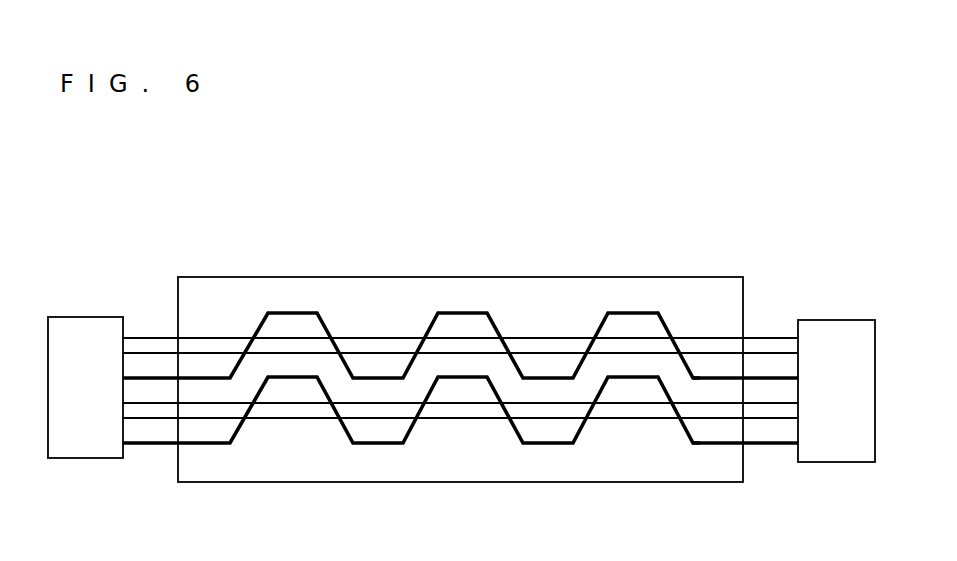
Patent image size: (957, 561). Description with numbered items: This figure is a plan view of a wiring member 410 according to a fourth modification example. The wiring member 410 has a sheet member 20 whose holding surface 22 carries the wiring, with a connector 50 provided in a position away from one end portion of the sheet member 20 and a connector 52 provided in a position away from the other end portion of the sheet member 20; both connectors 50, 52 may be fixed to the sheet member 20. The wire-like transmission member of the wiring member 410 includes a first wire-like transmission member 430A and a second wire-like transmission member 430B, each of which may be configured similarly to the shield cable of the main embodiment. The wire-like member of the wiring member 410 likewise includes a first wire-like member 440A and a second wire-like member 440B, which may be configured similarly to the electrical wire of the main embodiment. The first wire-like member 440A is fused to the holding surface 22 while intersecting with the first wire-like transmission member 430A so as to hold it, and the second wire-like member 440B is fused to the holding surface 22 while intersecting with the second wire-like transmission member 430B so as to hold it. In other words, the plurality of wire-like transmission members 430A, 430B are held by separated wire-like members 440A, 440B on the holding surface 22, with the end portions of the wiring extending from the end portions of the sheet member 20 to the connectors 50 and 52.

The sheet member 20 is at (460, 355).
The holding surface 22 is at (199, 298).
The connector 50 is at (85, 314).
The connector 52 is at (837, 320).
The wiring member 410 is at (463, 237).
The first wire-like transmission member 430A is at (547, 335).
The first wire-like member 440A is at (705, 376).
The second wire-like transmission member 430B is at (610, 421).
The second wire-like member 440B is at (708, 446).